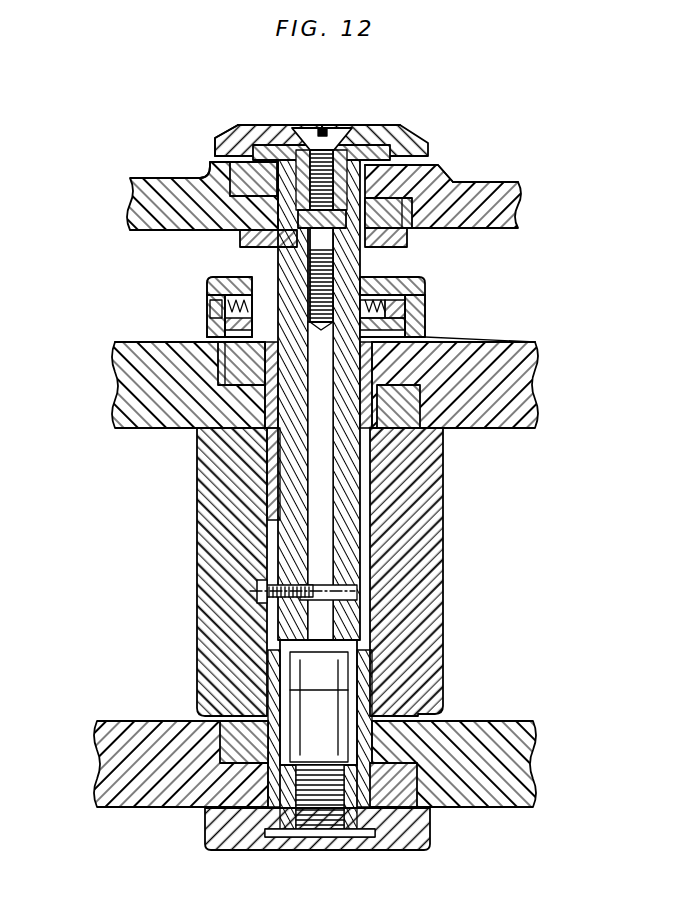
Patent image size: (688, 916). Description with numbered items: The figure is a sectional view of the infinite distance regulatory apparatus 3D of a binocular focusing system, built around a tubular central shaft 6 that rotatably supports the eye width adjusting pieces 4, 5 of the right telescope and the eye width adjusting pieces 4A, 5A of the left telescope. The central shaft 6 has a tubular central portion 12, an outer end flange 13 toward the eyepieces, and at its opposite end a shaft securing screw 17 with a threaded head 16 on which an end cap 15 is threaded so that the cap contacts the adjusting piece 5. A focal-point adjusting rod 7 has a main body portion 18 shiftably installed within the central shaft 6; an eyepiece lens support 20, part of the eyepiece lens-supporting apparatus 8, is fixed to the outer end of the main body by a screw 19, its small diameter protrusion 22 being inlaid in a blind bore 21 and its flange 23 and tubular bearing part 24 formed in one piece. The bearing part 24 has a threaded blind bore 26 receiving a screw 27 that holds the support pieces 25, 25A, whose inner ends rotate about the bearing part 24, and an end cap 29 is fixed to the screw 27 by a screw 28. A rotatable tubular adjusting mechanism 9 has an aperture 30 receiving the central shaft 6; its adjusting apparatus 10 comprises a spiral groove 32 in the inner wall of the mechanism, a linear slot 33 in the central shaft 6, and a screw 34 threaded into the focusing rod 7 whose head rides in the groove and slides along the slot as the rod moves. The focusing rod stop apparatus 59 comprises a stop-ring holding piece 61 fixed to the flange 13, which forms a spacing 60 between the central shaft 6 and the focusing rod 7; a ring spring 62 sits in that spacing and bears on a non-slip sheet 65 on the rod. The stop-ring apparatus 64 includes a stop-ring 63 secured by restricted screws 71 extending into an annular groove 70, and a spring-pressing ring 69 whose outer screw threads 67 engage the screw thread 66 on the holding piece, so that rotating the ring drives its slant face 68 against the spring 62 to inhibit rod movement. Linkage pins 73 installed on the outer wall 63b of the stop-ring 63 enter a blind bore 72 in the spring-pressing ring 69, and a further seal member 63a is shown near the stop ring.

The infinite distance regulatory apparatus 3D is at (412, 120).
The eye width adjusting piece 4 is at (133, 387).
The eye width adjusting piece 4A is at (537, 393).
The eye width adjusting piece 5 is at (118, 764).
The eye width adjusting piece 5A is at (523, 764).
The tubular central shaft 6 is at (372, 517).
The focal-point adjusting rod 7 is at (337, 482).
The eyepiece lens-supporting apparatus 8 is at (412, 228).
The rotatable tubular adjusting mechanism 9 is at (447, 625).
The adjusting apparatus 10 is at (240, 589).
The tubular central portion 12 is at (400, 683).
The outer end flange 13 is at (130, 362).
The end cap 15 is at (218, 848).
The threaded head 16 is at (285, 834).
The shaft securing screw 17 is at (350, 838).
The main body portion 18 is at (292, 492).
The screw 19 is at (447, 170).
The eyepiece lens support 20 is at (408, 205).
The blind bore 21 is at (350, 252).
The small diameter protrusion 22 is at (500, 183).
The flange 23 is at (185, 172).
The tubular bearing part 24 is at (372, 130).
The support piece 25 is at (135, 206).
The support piece 25A is at (522, 207).
The threaded blind bore 26 is at (338, 175).
The screw 27 is at (262, 150).
The screw 28 is at (318, 130).
The end cap 29 is at (228, 140).
The aperture 30 is at (360, 592).
The spiral groove 32 is at (245, 587).
The linear slot 33 is at (273, 632).
The screw 34 is at (250, 599).
The focusing rod stop apparatus 59 is at (395, 316).
The spacing 60 is at (452, 340).
The stop-ring holding piece 61 is at (390, 308).
The ring spring 62 is at (537, 370).
The stop-ring 63 is at (215, 285).
The seal member 63a is at (535, 348).
The outer wall 63b is at (210, 275).
The stop-ring apparatus 64 is at (425, 284).
The non-slip sheet 65 is at (470, 430).
The screw thread 66 is at (408, 325).
The screw threads 67 is at (212, 302).
The slant face 68 is at (207, 332).
The spring-pressing ring 69 is at (208, 312).
The annular groove 70 is at (410, 322).
The restricted screw 71 is at (210, 322).
The blind bore 72 is at (258, 278).
The linkage pins 73 is at (240, 280).